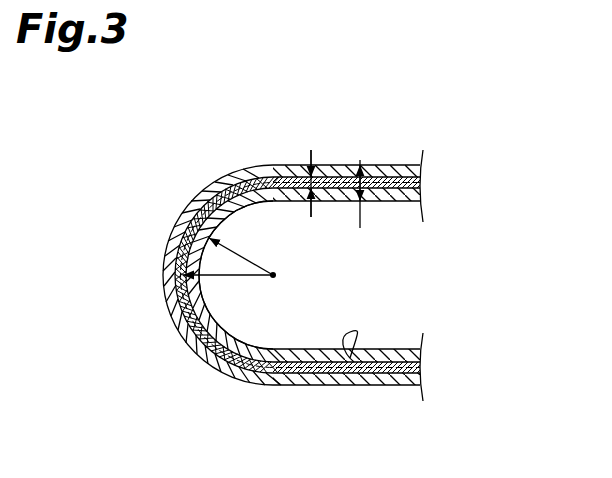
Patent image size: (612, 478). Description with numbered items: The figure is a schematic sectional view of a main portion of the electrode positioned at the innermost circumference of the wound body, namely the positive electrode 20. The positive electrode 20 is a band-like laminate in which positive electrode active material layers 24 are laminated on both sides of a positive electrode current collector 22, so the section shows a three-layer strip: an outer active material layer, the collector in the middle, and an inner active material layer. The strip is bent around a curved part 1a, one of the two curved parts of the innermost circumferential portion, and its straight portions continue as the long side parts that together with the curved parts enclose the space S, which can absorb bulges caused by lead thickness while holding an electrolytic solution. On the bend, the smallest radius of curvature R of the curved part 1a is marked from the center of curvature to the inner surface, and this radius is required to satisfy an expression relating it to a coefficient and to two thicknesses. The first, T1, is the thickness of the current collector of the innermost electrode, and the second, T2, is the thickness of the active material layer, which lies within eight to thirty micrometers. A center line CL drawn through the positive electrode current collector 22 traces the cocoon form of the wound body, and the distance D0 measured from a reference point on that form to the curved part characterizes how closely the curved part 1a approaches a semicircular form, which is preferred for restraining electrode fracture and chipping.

The positive electrode 20 is at (364, 286).
The positive electrode current collector 22 is at (414, 367).
The positive electrode active material layers 24 is at (412, 352).
The curved part 1a is at (220, 327).
The smallest radius of curvature R is at (242, 252).
The distance OA D0 is at (228, 291).
The current collector thickness T1 is at (306, 170).
The active material layer thickness T2 is at (372, 203).
The center line CL is at (282, 385).
The space S is at (350, 358).